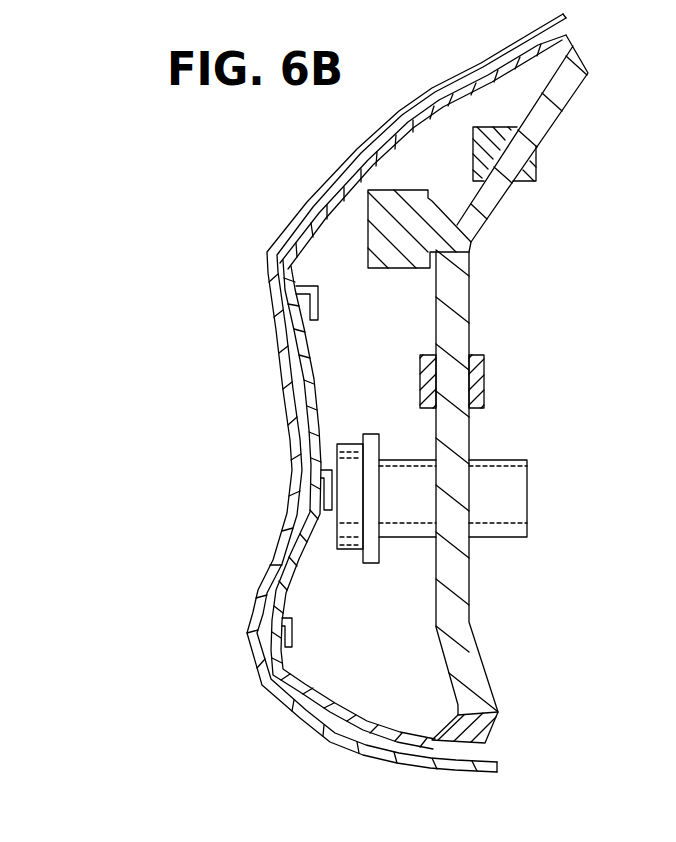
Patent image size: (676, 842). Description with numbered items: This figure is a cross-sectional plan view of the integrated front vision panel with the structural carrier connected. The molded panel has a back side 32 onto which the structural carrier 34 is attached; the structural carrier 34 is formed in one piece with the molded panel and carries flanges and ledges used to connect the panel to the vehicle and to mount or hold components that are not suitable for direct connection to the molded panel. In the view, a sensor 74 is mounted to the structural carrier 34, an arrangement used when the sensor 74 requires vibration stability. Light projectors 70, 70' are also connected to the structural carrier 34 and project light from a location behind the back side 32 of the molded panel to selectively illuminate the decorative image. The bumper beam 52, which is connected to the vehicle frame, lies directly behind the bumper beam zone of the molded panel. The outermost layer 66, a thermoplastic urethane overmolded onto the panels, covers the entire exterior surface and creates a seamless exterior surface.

The back side 32 is at (377, 650).
The structural carrier 34 is at (552, 102).
The bumper beam 52 is at (507, 495).
The outermost layer 66 is at (310, 722).
The light projector 70 is at (549, 165).
The light projector 70' is at (502, 375).
The sensor 74 is at (378, 217).